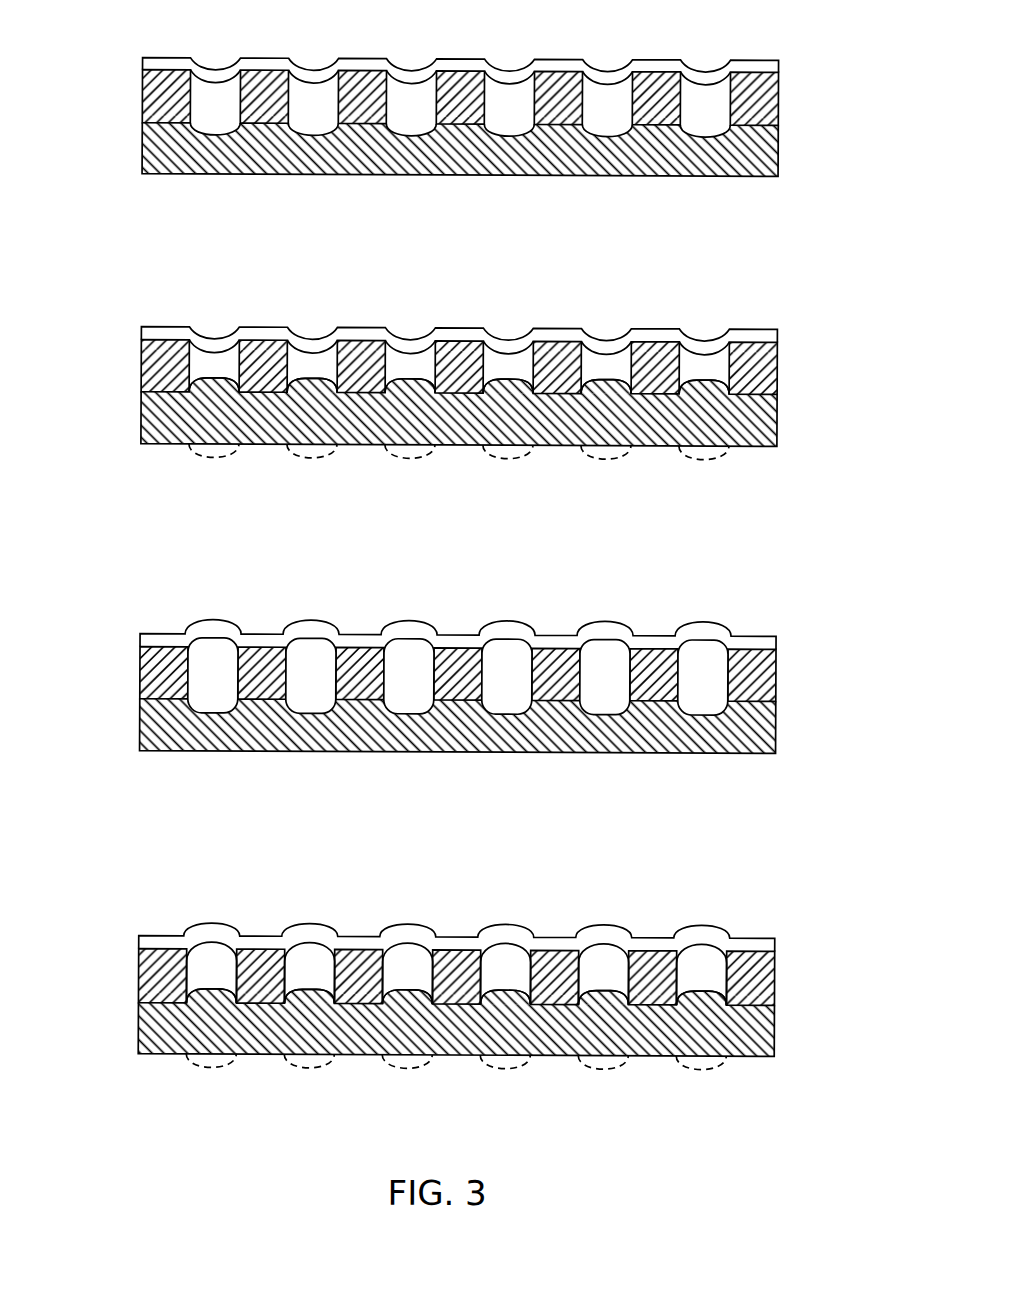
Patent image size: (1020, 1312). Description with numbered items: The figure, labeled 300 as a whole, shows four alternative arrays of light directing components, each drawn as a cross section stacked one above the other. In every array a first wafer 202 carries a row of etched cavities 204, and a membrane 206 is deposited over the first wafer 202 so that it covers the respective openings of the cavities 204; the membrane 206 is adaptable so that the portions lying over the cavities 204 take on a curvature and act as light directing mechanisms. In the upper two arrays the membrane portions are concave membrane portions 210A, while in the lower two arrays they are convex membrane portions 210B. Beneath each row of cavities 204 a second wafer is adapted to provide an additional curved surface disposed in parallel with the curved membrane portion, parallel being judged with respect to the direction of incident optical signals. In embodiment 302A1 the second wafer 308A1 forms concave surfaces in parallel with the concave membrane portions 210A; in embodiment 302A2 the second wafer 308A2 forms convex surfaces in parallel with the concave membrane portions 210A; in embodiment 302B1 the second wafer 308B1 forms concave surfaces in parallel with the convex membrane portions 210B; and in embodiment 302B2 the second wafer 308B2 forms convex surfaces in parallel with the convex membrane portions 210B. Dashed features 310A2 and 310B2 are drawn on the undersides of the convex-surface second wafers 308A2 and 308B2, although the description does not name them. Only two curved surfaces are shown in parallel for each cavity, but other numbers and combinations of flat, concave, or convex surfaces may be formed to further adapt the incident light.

The first wafer 202 is at (778, 101).
The cavities 204 is at (702, 116).
The membrane 206 is at (778, 65).
The concave membrane portions 210A is at (703, 71).
The convex membrane portions 210B is at (703, 648).
The embodiment A1 302A1 is at (100, 145).
The embodiment A2 302A2 is at (100, 415).
The embodiment B1 302B1 is at (100, 712).
The embodiment B2 302B2 is at (100, 1013).
The second wafer 308A1 is at (778, 153).
The second wafer 308A2 is at (778, 422).
The second wafer 308B1 is at (778, 731).
The second wafer 308B2 is at (778, 1033).
The backside deformation A2 310A2 is at (214, 458).
The backside deformation B2 310B2 is at (209, 1064).
The process sequence 300 is at (458, 1255).